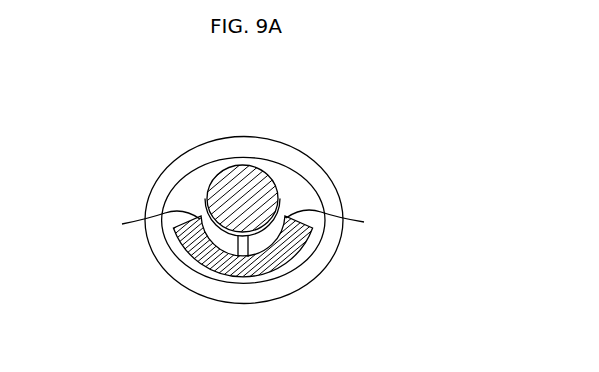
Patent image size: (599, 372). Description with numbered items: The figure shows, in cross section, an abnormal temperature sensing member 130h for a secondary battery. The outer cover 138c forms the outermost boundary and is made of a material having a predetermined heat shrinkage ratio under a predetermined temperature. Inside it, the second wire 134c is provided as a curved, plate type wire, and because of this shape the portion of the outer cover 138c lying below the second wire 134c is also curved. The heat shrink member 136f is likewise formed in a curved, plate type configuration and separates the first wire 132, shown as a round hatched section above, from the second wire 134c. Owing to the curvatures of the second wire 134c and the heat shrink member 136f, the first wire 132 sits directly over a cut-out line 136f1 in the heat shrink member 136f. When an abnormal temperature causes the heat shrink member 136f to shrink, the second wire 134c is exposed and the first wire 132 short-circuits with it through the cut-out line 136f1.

The abnormal temperature sensing member 130h is at (130, 78).
The first wire 132 is at (252, 174).
The second wire 134c is at (197, 263).
The heat shrink member 136f is at (244, 222).
The cut-out line 136f1 is at (242, 263).
The outer cover 138c is at (328, 182).